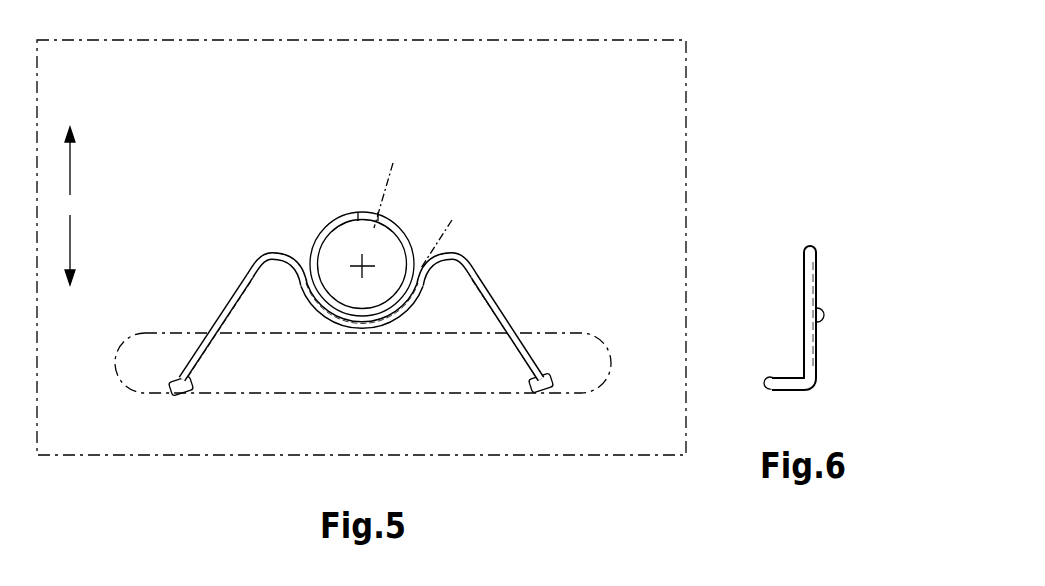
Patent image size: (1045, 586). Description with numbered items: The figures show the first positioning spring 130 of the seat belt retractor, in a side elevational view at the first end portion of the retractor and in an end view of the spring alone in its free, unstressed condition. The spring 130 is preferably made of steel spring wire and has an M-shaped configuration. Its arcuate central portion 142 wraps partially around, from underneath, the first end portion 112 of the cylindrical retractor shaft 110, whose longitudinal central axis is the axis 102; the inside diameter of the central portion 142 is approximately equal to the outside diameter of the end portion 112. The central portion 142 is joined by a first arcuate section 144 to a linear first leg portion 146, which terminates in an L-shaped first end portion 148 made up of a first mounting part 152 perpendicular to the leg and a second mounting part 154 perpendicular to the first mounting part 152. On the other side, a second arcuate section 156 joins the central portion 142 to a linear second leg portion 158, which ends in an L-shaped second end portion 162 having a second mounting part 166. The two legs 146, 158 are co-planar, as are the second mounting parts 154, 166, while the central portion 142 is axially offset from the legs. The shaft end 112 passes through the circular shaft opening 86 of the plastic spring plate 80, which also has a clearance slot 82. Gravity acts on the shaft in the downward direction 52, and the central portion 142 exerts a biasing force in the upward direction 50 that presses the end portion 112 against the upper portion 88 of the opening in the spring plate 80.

In FIG. 5, the upward direction arrow 50 is at (86, 161).
In FIG. 5, the downward direction arrow 52 is at (86, 250).
In FIG. 5, the spring plate 80 is at (136, 465).
In FIG. 5, the clearance slot 82 is at (118, 377).
In FIG. 5, the shaft opening 86 is at (446, 233).
In FIG. 5, the upper portion of cylindrical surface 88 is at (393, 181).
In FIG. 5, the axis 102 is at (356, 266).
In FIG. 5, the retractor shaft 110 is at (347, 204).
In FIG. 5, the first end portion of shaft 112 is at (405, 228).
In FIG. 5, the first positioning spring 130 is at (374, 358).
In FIG. 6, the first positioning spring 130 is at (792, 303).
In FIG. 5, the arcuate central portion 142 is at (375, 322).
In FIG. 6, the arcuate central portion 142 is at (830, 315).
In FIG. 5, the first arcuate section 144 is at (450, 256).
In FIG. 6, the first arcuate section 144 is at (812, 248).
In FIG. 5, the first leg portion 146 is at (502, 318).
In FIG. 6, the first leg portion 146 is at (812, 330).
In FIG. 5, the first end portion 148 is at (582, 404).
In FIG. 6, the first end portion 148 is at (758, 398).
In FIG. 6, the first mounting part 152 is at (788, 390).
In FIG. 5, the second mounting part 154 is at (547, 380).
In FIG. 6, the second mounting part 154 is at (766, 378).
In FIG. 5, the second arcuate section 156 is at (252, 262).
In FIG. 5, the second leg portion 158 is at (222, 315).
In FIG. 5, the second end portion 162 is at (167, 407).
In FIG. 5, the second mounting part 166 is at (180, 380).